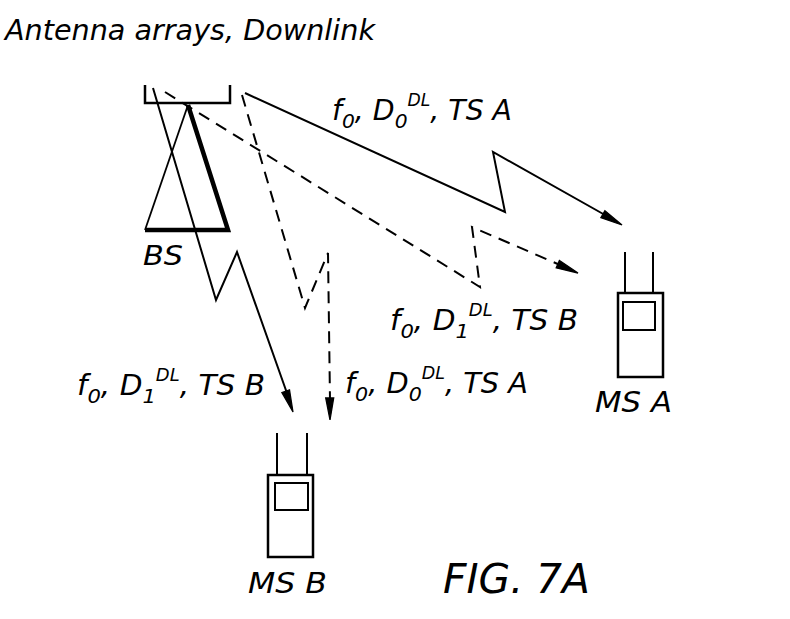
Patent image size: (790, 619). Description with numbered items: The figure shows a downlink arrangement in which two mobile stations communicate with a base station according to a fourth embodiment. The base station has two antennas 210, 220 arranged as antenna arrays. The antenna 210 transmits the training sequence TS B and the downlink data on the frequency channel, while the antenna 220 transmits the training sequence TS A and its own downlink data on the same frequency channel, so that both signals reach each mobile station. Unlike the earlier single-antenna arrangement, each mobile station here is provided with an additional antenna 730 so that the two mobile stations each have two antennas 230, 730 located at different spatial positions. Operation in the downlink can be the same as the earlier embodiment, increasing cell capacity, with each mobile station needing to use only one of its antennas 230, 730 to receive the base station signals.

The antenna 210 is at (145, 92).
The antenna 220 is at (233, 87).
The antenna 230 is at (630, 260).
The additional antenna 730 is at (655, 265).